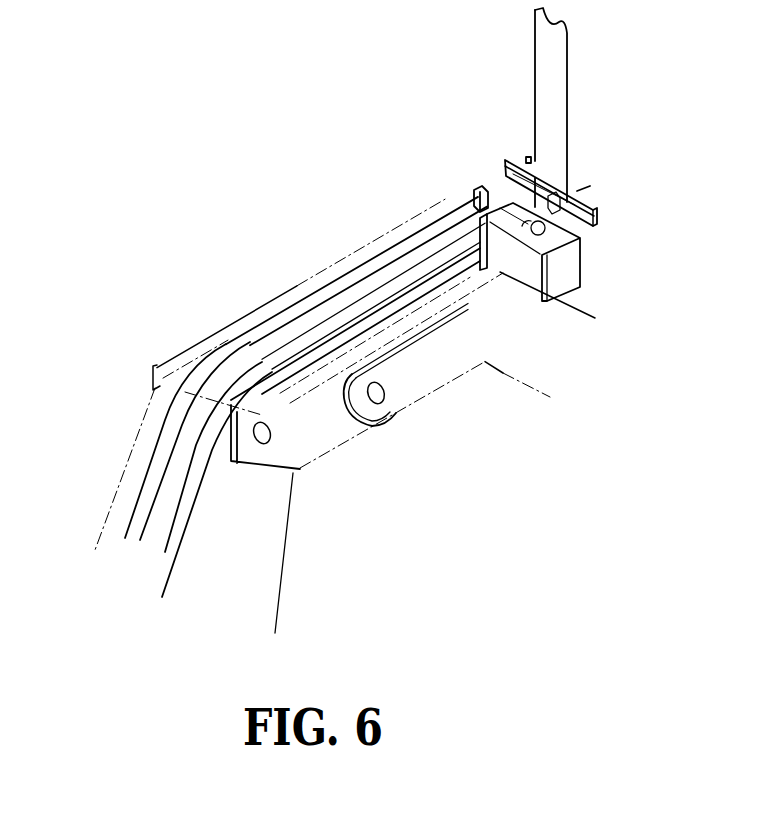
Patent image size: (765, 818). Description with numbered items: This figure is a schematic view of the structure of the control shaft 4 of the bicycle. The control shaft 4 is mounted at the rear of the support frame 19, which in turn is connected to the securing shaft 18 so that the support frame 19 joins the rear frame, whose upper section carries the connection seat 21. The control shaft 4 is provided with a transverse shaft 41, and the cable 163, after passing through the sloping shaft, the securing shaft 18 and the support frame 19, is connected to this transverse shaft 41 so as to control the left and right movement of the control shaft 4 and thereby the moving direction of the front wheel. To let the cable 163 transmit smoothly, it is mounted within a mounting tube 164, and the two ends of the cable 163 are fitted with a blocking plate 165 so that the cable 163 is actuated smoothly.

The control shaft 4 is at (536, 85).
The transverse shaft 41 is at (517, 160).
The cable 163 is at (478, 193).
The blocking plate 165 is at (477, 196).
The mounting tube 164 is at (377, 253).
The support frame 19 is at (250, 308).
The securing shaft 18 is at (137, 452).
The connection seat 21 is at (462, 372).